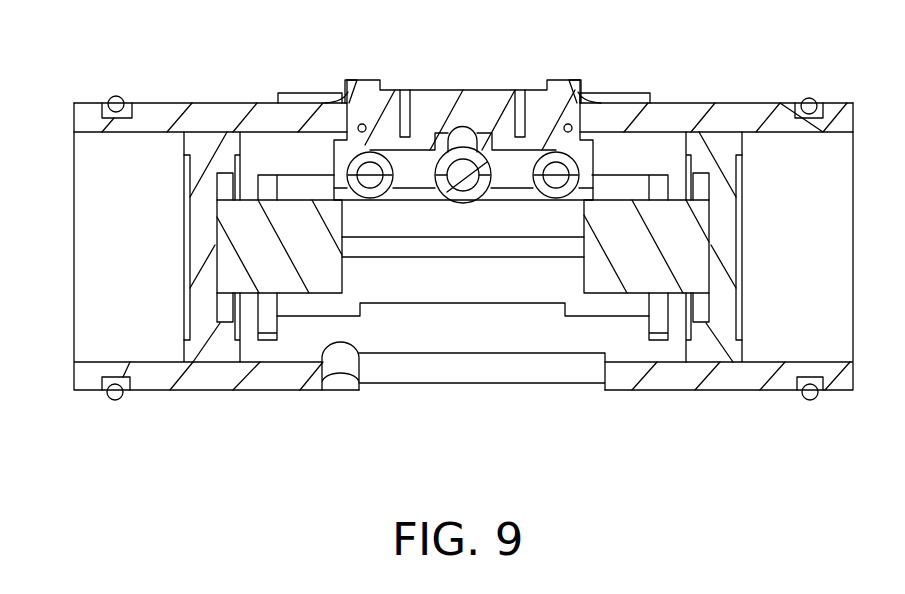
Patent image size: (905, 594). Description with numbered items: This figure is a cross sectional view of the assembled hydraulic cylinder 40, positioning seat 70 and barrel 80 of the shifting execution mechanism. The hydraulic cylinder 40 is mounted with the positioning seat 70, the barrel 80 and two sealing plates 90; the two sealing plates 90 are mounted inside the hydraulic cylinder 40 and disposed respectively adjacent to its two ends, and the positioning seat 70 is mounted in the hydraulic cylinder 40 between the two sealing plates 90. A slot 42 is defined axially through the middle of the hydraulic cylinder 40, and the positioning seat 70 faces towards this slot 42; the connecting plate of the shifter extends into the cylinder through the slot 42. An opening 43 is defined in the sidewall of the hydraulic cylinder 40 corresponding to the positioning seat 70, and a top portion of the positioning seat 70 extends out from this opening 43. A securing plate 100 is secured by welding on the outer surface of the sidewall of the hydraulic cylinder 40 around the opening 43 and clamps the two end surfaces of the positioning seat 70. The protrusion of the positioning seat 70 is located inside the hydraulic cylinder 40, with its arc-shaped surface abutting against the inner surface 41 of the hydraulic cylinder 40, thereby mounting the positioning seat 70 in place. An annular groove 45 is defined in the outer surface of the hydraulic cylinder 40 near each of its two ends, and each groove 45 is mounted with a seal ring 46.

The hydraulic cylinder 40 is at (145, 375).
The inner surface 41 is at (130, 133).
The slot 42 is at (447, 365).
The opening 43 is at (605, 105).
The annular groove 45 is at (821, 104).
The seal ring 46 is at (113, 97).
The positioning seat 70 is at (435, 108).
The barrel 80 is at (597, 270).
The sealing plate 90 is at (220, 350).
The securing plate 100 is at (320, 98).